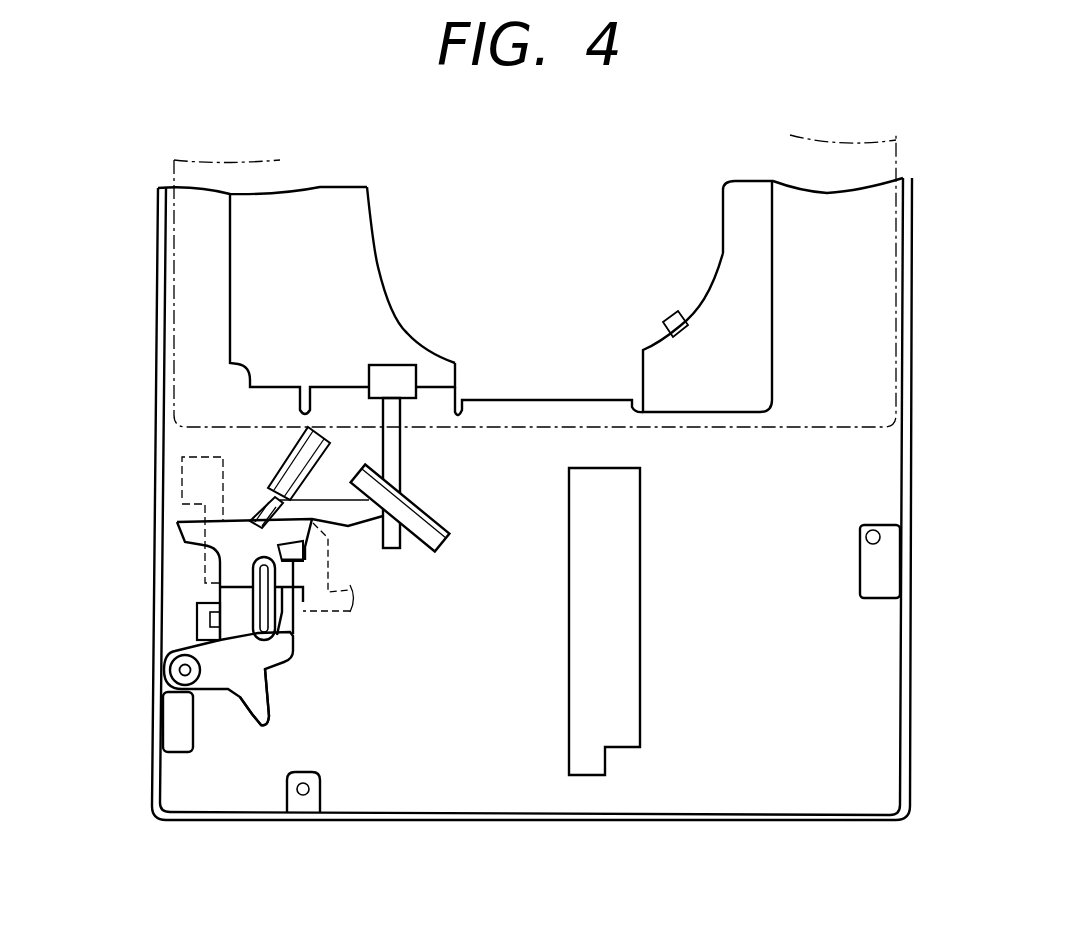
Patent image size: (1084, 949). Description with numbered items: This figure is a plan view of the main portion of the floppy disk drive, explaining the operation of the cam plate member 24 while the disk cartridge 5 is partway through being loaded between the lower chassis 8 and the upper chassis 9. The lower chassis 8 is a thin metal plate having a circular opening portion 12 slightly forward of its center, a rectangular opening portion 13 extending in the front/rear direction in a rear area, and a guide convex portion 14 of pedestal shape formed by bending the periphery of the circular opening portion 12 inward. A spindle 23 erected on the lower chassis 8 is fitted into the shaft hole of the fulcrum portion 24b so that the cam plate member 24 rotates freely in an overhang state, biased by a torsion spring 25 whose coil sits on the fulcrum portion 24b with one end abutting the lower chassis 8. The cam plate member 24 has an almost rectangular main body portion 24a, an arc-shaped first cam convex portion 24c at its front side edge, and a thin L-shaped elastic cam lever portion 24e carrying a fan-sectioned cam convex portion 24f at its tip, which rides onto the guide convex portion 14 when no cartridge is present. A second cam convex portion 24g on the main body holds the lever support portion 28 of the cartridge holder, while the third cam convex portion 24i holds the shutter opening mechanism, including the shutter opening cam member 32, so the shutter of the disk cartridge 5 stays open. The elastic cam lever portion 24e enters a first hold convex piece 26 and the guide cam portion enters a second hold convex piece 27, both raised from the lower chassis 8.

The disk cartridge 5 is at (828, 432).
The lower chassis 8 is at (845, 790).
The upper chassis 9 is at (182, 492).
The circular opening portion 12 is at (380, 265).
The rectangular opening portion 13 is at (641, 610).
The guide convex portion 14 is at (315, 232).
The spindle 23 is at (180, 668).
The cam plate member 24 is at (225, 692).
The main body portion 24a is at (278, 680).
The fulcrum portion 24b is at (213, 668).
The first cam convex portion 24c is at (182, 542).
The elastic cam lever portion 24e is at (400, 458).
The cam convex portion 24f is at (397, 375).
The second cam convex portion 24g is at (297, 643).
The third cam convex portion 24i is at (305, 550).
The torsion spring 25 is at (197, 643).
The first hold convex piece 26 is at (432, 507).
The second hold convex piece 27 is at (260, 500).
The lever support portion 28 is at (345, 615).
The shutter opening cam member 32 is at (300, 443).